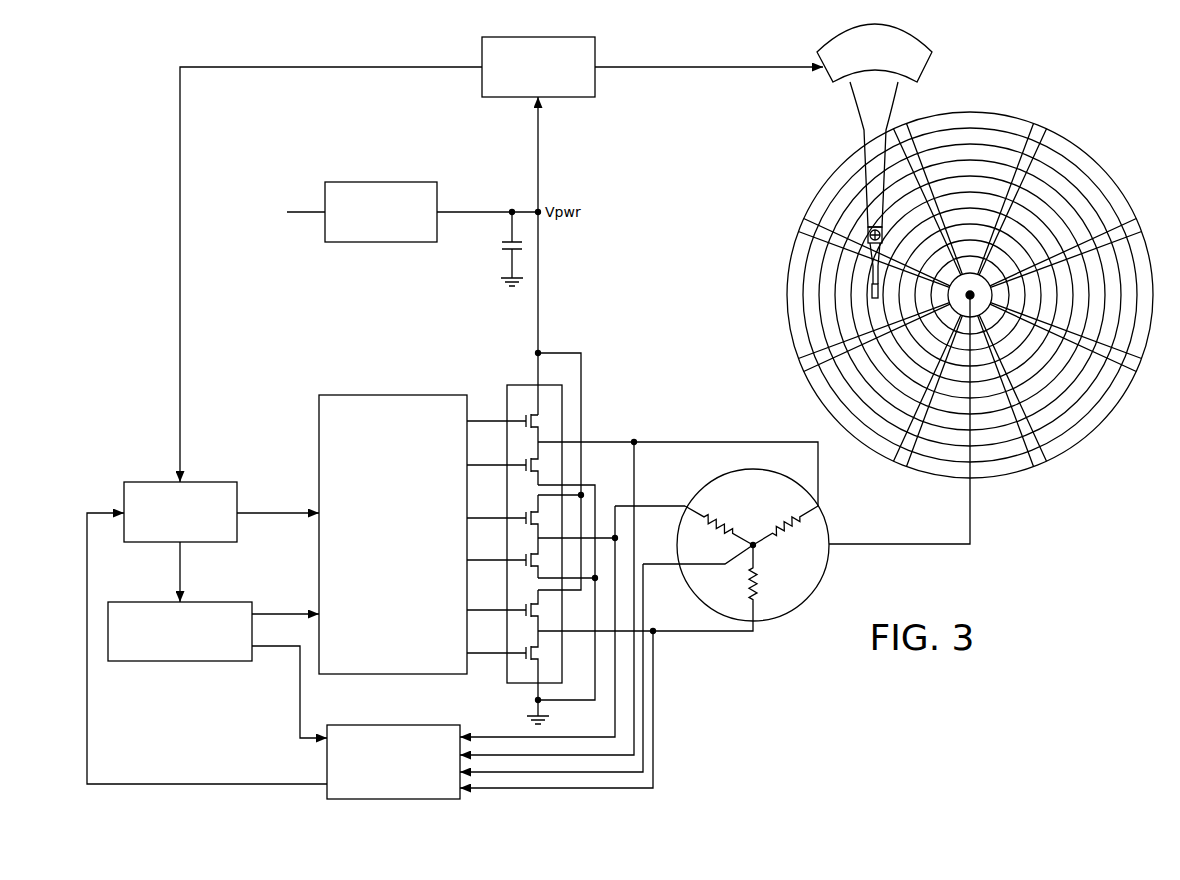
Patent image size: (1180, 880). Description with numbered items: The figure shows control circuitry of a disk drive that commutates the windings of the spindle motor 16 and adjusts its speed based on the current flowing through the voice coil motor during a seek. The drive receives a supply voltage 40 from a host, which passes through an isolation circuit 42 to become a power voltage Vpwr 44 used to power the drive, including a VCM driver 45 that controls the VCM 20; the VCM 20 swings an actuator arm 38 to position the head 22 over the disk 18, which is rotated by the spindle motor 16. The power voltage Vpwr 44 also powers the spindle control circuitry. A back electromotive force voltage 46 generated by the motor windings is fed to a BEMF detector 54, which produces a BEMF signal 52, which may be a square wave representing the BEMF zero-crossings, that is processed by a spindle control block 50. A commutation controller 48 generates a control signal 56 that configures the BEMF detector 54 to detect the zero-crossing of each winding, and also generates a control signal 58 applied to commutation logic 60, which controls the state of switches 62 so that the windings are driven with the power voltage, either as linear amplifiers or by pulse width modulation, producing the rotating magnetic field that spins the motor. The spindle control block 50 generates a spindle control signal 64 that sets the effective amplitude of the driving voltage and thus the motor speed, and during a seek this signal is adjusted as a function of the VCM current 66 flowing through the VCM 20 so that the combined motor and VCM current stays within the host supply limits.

The spindle motor 16 is at (829, 562).
The disk 18 is at (1096, 156).
The VCM 20 is at (830, 78).
The head 22 is at (870, 296).
The actuator arm 38 is at (861, 130).
The supply voltage 40 is at (302, 212).
The isolation circuit 42 is at (380, 182).
The power voltage Vpwr 44 is at (487, 212).
The VCM driver 45 is at (577, 98).
The back electromotive force voltage 46 is at (491, 730).
The commutation controller 48 is at (180, 662).
The spindle control block 50 is at (217, 543).
The BEMF signal 52 is at (212, 784).
The BEMF detector 54 is at (393, 725).
The control signal 56 is at (301, 690).
The control signal 58 is at (278, 613).
The commutation logic 60 is at (393, 395).
The switches 62 is at (522, 385).
The spindle control signal 64 is at (272, 512).
The VCM current 66 is at (360, 67).